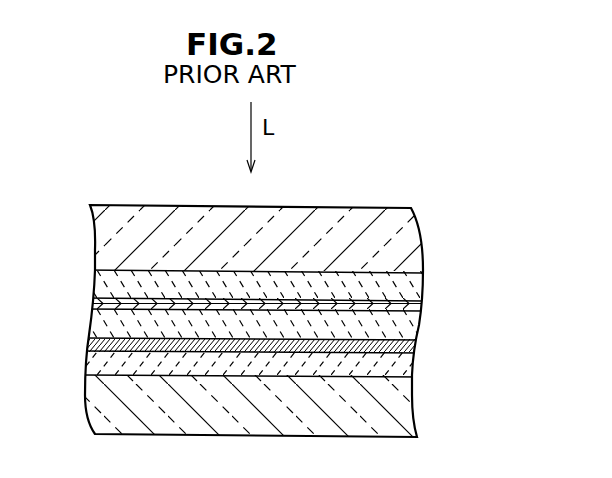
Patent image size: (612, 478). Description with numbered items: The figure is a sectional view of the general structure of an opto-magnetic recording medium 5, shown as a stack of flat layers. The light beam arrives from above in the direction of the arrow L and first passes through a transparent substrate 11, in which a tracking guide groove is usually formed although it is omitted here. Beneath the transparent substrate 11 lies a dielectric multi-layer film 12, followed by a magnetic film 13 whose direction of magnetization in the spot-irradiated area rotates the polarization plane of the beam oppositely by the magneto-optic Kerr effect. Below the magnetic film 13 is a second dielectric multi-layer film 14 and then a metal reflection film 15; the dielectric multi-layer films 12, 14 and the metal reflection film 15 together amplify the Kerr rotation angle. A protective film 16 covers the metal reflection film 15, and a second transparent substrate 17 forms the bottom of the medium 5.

The opto-magnetic recording medium 5 is at (279, 302).
The transparent substrate 11 is at (423, 253).
The dielectric multi-layer film 12 is at (423, 290).
The magnetic film 13 is at (422, 313).
The dielectric multi-layer film 14 is at (415, 340).
The metal reflection film 15 is at (414, 354).
The protective film 16 is at (412, 374).
The transparent substrate 17 is at (413, 408).